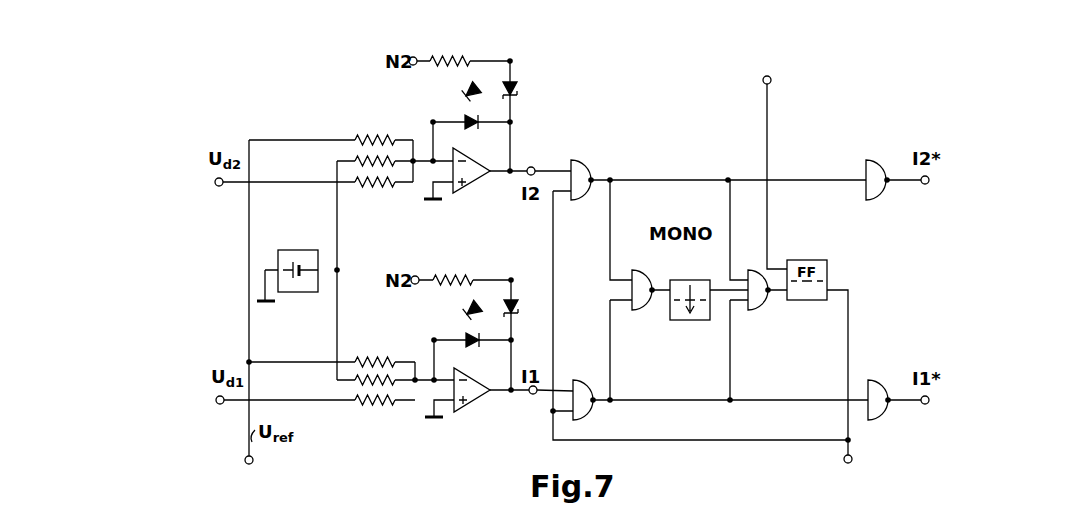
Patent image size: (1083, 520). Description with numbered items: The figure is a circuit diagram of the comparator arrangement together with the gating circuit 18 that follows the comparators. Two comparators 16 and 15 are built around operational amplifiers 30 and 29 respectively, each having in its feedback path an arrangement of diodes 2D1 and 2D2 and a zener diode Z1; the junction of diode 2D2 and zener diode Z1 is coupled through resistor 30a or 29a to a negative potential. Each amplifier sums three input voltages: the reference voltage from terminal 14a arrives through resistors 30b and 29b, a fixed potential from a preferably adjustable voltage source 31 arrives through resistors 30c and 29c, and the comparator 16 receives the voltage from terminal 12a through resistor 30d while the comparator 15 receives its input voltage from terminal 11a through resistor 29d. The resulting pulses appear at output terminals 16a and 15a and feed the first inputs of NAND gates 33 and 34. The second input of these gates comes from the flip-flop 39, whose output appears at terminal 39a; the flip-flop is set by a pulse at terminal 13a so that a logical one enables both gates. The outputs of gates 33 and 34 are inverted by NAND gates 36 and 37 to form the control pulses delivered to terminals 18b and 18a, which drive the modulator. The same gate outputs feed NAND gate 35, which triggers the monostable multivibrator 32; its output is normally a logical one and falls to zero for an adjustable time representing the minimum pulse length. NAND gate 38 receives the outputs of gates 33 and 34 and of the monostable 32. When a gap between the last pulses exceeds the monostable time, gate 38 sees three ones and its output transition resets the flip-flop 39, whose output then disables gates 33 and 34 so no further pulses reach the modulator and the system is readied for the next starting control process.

The input terminal Ud1 11a is at (216, 399).
The terminal 12a is at (215, 181).
The terminal 13a is at (770, 67).
The terminal 14a is at (251, 474).
The comparator 15 is at (418, 337).
The output terminal 15a is at (531, 396).
The comparator 16 is at (418, 111).
The output terminal 16a is at (528, 166).
The gating circuit 18 is at (685, 385).
The terminal 18a is at (928, 404).
The terminal 18b is at (928, 184).
The operational amplifier 29 is at (470, 406).
The resistor 29a is at (438, 279).
The resistor 29b is at (382, 358).
The resistor 29c is at (355, 378).
The resistor 29d is at (386, 406).
The operational amplifier 30 is at (470, 184).
The resistor 30a is at (437, 62).
The resistor 30b is at (356, 137).
The resistor 30c is at (354, 158).
The resistor 30d is at (383, 189).
The voltage source 31 is at (284, 249).
The monostable multivibrator 32 is at (678, 280).
The NAND gate 33 is at (586, 147).
The NAND gate 34 is at (584, 366).
The NAND gate 35 is at (648, 309).
The NAND gate 36 is at (866, 165).
The NAND gate 37 is at (880, 366).
The NAND gate 38 is at (764, 309).
The flip-flop 39 is at (797, 260).
The terminal 39a is at (846, 463).
The diode 2D1 is at (472, 131).
The diode 2D2 is at (476, 82).
The zener diode Z1 is at (515, 84).